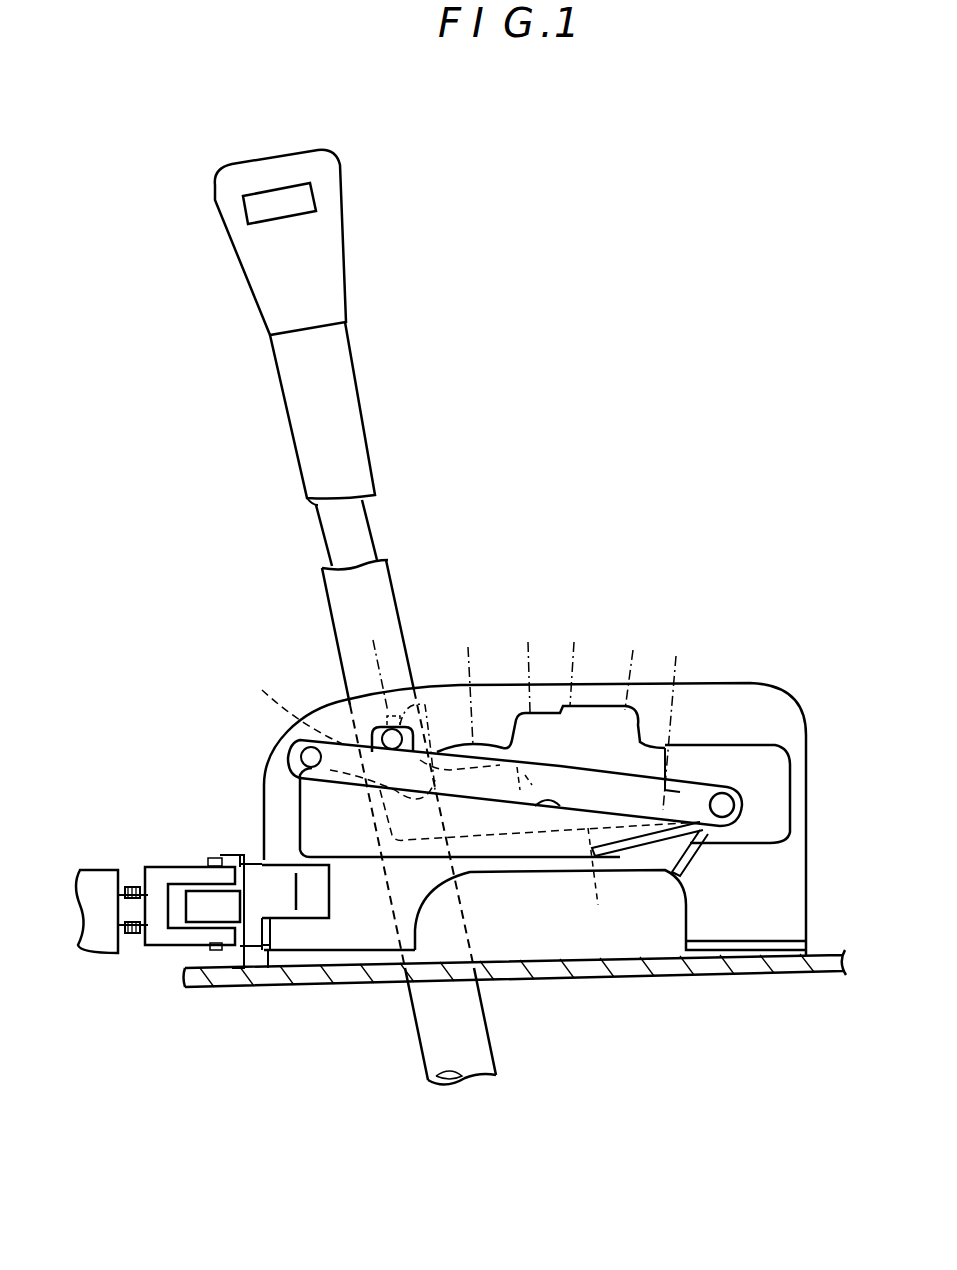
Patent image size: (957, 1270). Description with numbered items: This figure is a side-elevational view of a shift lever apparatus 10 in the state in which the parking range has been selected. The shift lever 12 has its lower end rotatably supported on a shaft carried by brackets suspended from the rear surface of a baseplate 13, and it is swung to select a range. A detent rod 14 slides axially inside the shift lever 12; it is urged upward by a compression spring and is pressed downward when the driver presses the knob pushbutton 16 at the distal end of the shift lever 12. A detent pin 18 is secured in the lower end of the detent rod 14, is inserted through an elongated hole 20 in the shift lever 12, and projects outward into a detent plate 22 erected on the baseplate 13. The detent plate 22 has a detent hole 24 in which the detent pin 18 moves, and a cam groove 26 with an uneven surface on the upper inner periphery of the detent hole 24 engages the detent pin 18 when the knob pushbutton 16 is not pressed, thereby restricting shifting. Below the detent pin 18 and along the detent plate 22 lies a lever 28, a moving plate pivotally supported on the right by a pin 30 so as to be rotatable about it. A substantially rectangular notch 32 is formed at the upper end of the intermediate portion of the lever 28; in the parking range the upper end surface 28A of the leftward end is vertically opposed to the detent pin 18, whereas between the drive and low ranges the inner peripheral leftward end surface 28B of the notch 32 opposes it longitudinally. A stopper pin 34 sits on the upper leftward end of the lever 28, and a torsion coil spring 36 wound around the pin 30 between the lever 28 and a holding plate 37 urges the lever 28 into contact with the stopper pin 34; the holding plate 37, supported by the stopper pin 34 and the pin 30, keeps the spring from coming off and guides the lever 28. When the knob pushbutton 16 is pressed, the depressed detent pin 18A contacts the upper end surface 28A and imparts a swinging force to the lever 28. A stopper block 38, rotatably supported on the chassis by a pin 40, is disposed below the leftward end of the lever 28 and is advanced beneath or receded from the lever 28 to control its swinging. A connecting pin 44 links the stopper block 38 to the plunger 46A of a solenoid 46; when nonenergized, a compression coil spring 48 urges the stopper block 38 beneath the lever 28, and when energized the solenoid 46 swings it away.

The shift lever apparatus 10 is at (727, 514).
The shift lever 12 is at (342, 392).
The baseplate 13 is at (570, 985).
The detent rod 14 is at (358, 541).
The knob pushbutton 16 is at (287, 196).
The detent pin 18 is at (372, 733).
The detent pin (depressed state) 18A is at (413, 722).
The elongated hole 20 is at (315, 916).
The detent plate 22 is at (757, 704).
The detent hole 24 is at (608, 878).
The cam groove 26 is at (612, 718).
The lever 28 is at (500, 860).
The upper end surface 28A is at (380, 724).
The inner peripheral leftward end surface 28B is at (511, 738).
The pin 30 is at (735, 805).
The notch 32 is at (556, 820).
The stopper pin 34 is at (330, 770).
The torsion coil spring 36 is at (684, 872).
The holding plate 37 is at (686, 788).
The stopper block 38 is at (297, 878).
The pin 40 is at (236, 855).
The connecting pin 44 is at (214, 860).
The solenoid 46 is at (98, 950).
The plunger 46A is at (157, 960).
The compression coil spring 48 is at (130, 945).